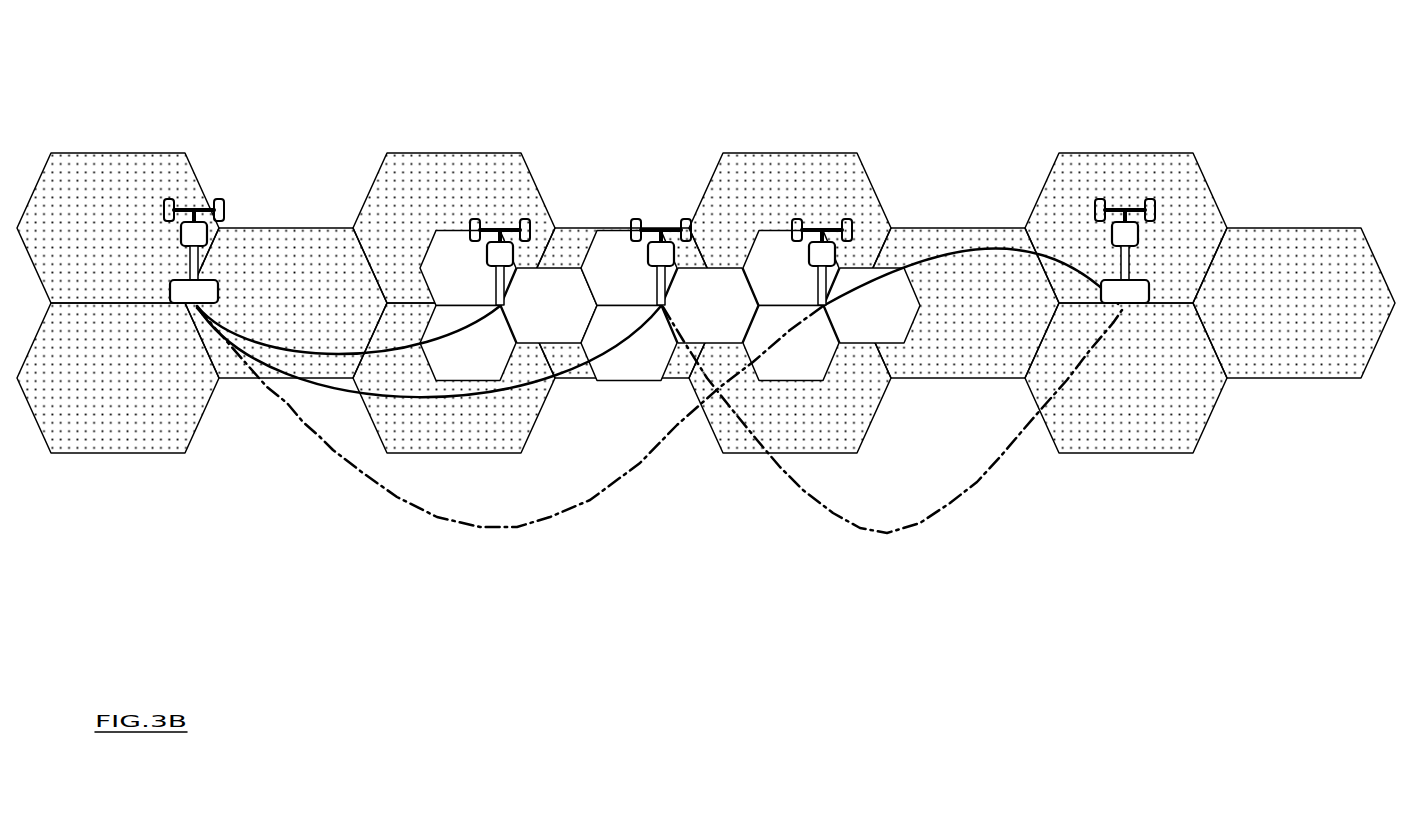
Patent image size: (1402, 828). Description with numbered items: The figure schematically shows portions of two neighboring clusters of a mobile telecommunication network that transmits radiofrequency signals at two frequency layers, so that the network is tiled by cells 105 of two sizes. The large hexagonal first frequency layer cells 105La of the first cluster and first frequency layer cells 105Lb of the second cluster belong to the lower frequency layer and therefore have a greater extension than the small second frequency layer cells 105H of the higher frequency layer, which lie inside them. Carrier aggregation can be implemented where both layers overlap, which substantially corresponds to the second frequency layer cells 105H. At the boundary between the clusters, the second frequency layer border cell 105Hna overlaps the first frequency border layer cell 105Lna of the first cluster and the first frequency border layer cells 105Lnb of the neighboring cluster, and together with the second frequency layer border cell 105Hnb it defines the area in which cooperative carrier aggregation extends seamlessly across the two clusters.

The cells 105 is at (923, 496).
The first frequency layer cells 105La is at (107, 178).
The first frequency layer cells 105Lb is at (1180, 178).
The first frequency border layer cell 105Lna is at (587, 378).
The first frequency border layer cells 105Lnb is at (828, 180).
The second frequency layer cells 105H is at (492, 301).
The second frequency layer border cell 105Hna is at (744, 314).
The second frequency layer border cell 105Hnb is at (815, 281).